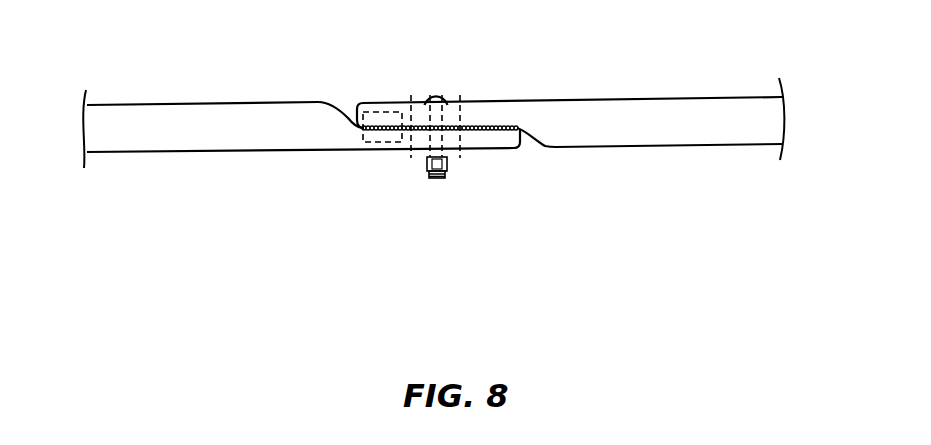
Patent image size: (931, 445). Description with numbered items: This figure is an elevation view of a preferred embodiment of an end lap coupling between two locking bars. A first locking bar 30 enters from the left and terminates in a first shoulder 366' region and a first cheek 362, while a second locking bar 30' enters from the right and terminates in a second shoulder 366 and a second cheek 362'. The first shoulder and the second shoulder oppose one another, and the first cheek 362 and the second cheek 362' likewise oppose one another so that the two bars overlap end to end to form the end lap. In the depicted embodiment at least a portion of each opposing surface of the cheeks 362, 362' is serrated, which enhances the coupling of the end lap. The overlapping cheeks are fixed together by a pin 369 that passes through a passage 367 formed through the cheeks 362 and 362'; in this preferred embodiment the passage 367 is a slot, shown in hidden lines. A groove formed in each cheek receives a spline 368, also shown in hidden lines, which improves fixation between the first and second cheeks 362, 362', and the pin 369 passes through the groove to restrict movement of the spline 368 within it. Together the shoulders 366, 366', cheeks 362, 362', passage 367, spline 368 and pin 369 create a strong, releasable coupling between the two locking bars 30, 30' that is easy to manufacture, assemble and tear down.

The locking bar 30 is at (298, 118).
The second locking bar 30' is at (573, 111).
The first cheek 362 is at (425, 164).
The second cheek 362' is at (460, 92).
The first shoulder 366 is at (546, 172).
The second shoulder 366' is at (335, 79).
The passage 367 is at (408, 108).
The spline 368 is at (360, 132).
The pin 369 is at (437, 86).